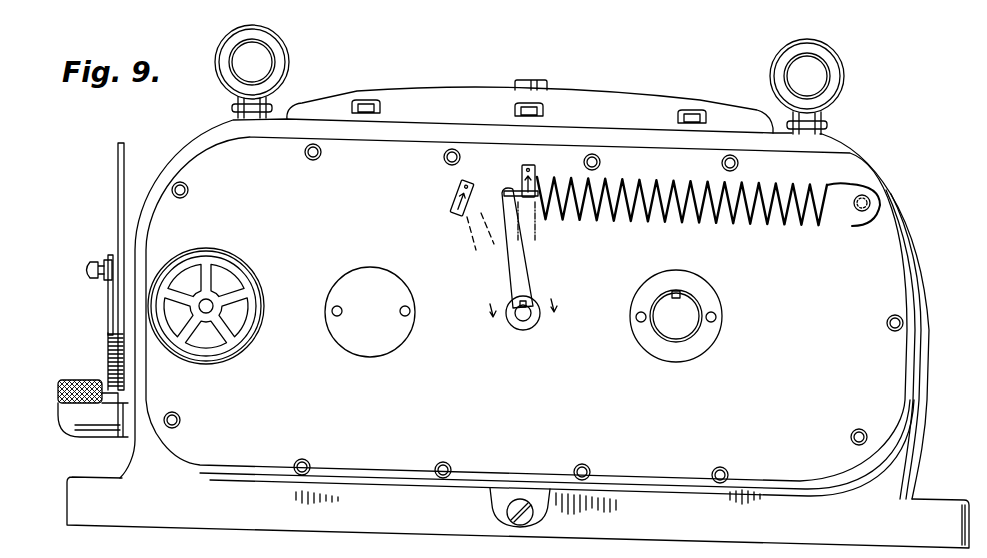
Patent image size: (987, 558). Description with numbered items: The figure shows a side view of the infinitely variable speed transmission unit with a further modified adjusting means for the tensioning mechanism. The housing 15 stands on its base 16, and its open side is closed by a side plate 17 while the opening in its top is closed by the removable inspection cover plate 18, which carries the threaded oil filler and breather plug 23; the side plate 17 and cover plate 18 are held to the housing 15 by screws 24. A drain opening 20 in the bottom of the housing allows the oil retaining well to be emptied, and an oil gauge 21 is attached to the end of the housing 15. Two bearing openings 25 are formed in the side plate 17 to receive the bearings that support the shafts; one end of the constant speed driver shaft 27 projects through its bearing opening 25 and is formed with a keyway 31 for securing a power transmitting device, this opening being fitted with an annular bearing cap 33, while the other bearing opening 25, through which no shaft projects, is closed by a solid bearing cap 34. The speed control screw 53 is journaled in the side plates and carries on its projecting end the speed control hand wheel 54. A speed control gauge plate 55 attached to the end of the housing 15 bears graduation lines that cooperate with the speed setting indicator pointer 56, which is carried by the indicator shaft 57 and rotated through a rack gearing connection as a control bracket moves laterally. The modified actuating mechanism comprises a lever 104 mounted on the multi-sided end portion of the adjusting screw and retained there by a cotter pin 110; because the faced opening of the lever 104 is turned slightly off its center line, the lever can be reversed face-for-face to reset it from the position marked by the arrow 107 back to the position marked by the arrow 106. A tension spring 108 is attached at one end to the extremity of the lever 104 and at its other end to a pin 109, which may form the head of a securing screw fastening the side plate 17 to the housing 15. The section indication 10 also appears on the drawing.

The section line 10 is at (505, 314).
The housing 15 is at (929, 352).
The base 16 is at (961, 506).
The side plate 17 is at (568, 398).
The inspection cover plate 18 is at (614, 100).
The opening 20 is at (522, 497).
The oil gauge 21 is at (68, 428).
The oil filler and breather plug 23 is at (526, 86).
The screws 24 is at (368, 100).
The bearing openings 25 is at (371, 250).
The constant speed driver shaft 27 is at (672, 324).
The keyway 31 is at (676, 290).
The annular bearing cap 33 is at (715, 306).
The solid bearing cap 34 is at (377, 340).
The speed control screw 53 is at (206, 306).
The speed control hand wheel 54 is at (238, 262).
The speed control gauge plate 55 is at (118, 172).
The speed setting indicator pointer 56 is at (106, 302).
The indicator shaft 57 is at (113, 253).
The lever 104 is at (530, 290).
The arrow 106 is at (452, 193).
The arrow 107 is at (534, 181).
The tension spring 108 is at (710, 222).
The pin 109 is at (862, 213).
The cotter pin 110 is at (532, 303).